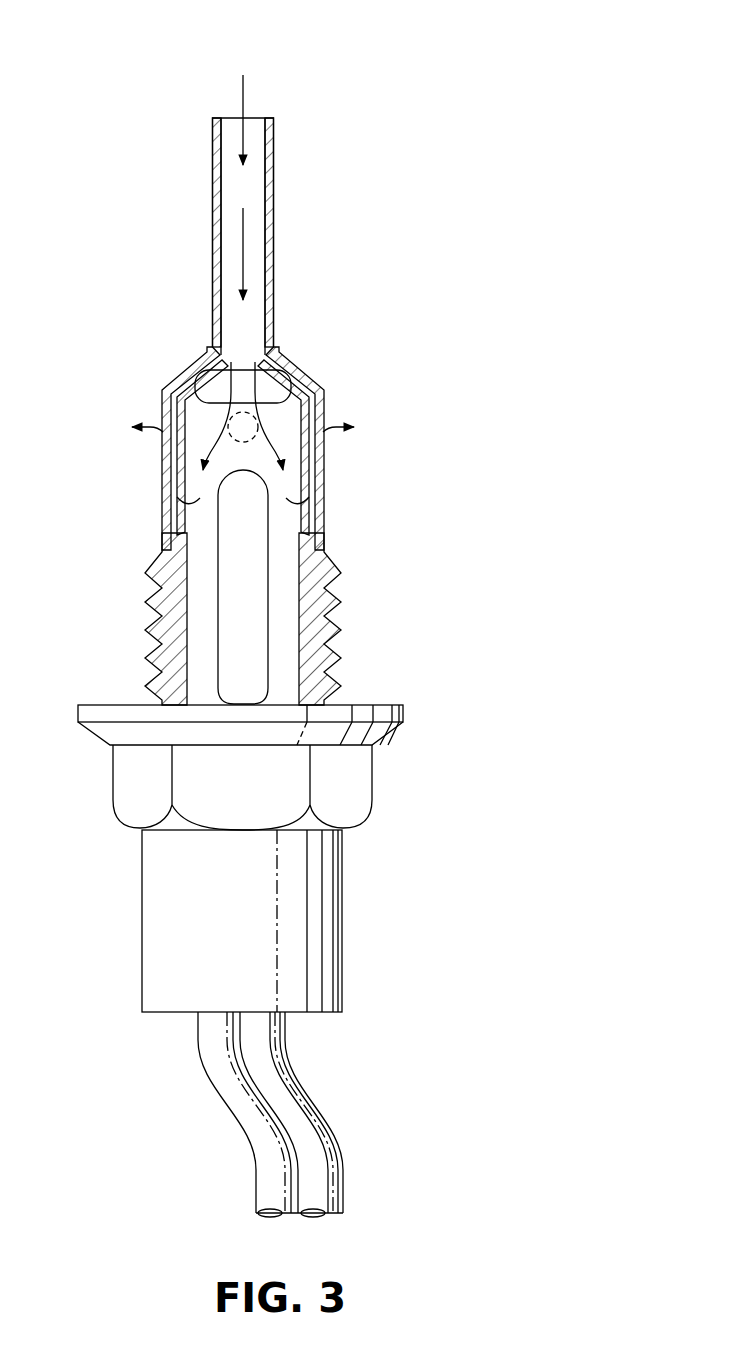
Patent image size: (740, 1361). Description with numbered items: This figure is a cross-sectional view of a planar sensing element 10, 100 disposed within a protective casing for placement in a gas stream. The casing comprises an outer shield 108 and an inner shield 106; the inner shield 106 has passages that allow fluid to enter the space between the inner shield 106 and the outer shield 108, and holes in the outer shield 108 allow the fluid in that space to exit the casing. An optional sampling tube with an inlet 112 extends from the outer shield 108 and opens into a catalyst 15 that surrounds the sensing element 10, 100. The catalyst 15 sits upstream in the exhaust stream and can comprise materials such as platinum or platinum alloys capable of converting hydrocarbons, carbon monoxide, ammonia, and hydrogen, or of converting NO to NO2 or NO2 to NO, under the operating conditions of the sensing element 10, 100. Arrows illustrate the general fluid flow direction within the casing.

The sensing element 100 is at (128, 124).
The inlet 112 is at (246, 92).
The outer shield 108 is at (180, 375).
The inner shield 106 is at (318, 430).
The catalyst 15 is at (273, 384).
The sensing element 10 is at (260, 524).